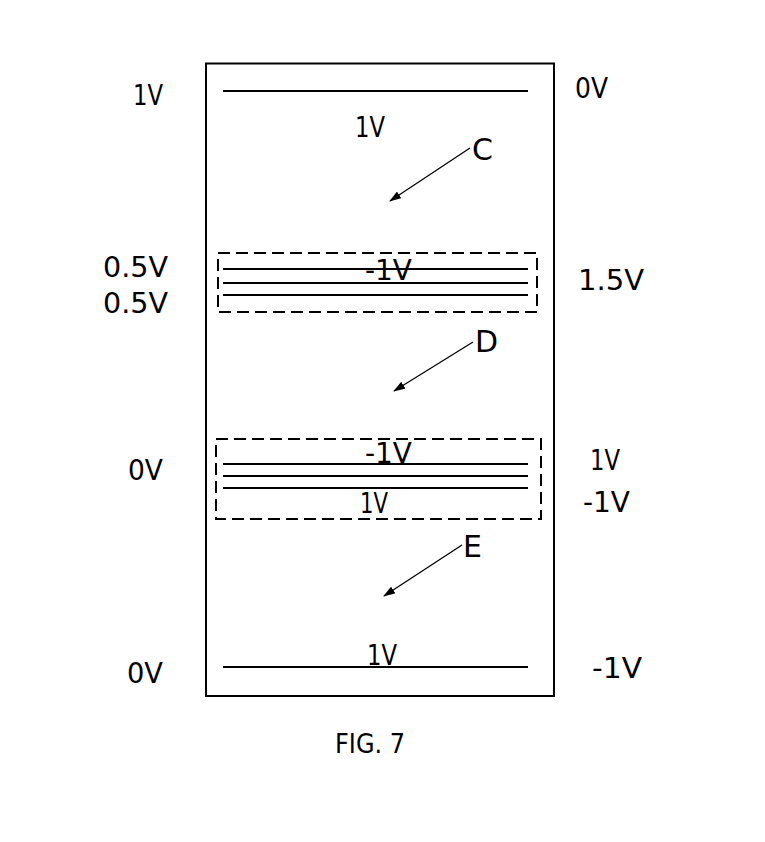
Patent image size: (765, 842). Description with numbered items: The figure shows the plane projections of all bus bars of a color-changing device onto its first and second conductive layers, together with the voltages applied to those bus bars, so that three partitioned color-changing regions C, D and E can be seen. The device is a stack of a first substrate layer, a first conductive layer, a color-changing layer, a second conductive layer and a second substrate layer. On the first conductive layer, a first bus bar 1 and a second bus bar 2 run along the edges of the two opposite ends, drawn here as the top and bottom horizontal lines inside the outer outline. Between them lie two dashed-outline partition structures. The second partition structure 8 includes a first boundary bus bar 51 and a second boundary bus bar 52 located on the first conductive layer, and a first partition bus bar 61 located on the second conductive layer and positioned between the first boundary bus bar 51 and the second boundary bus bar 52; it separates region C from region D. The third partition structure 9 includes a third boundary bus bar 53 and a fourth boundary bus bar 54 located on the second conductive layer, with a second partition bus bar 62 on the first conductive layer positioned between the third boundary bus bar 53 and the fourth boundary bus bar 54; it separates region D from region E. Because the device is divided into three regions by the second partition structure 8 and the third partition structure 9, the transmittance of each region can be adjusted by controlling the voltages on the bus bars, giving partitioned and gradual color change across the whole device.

The first bus bar 1 is at (223, 90).
The second bus bar 2 is at (222, 667).
The second partition structure 8 is at (470, 253).
The third partition structure 9 is at (469, 439).
The first boundary bus bar 51 is at (221, 267).
The second boundary bus bar 52 is at (219, 296).
The third boundary bus bar 53 is at (221, 462).
The fourth boundary bus bar 54 is at (219, 490).
The first partition bus bar 61 is at (531, 281).
The second partition bus bar 62 is at (530, 477).